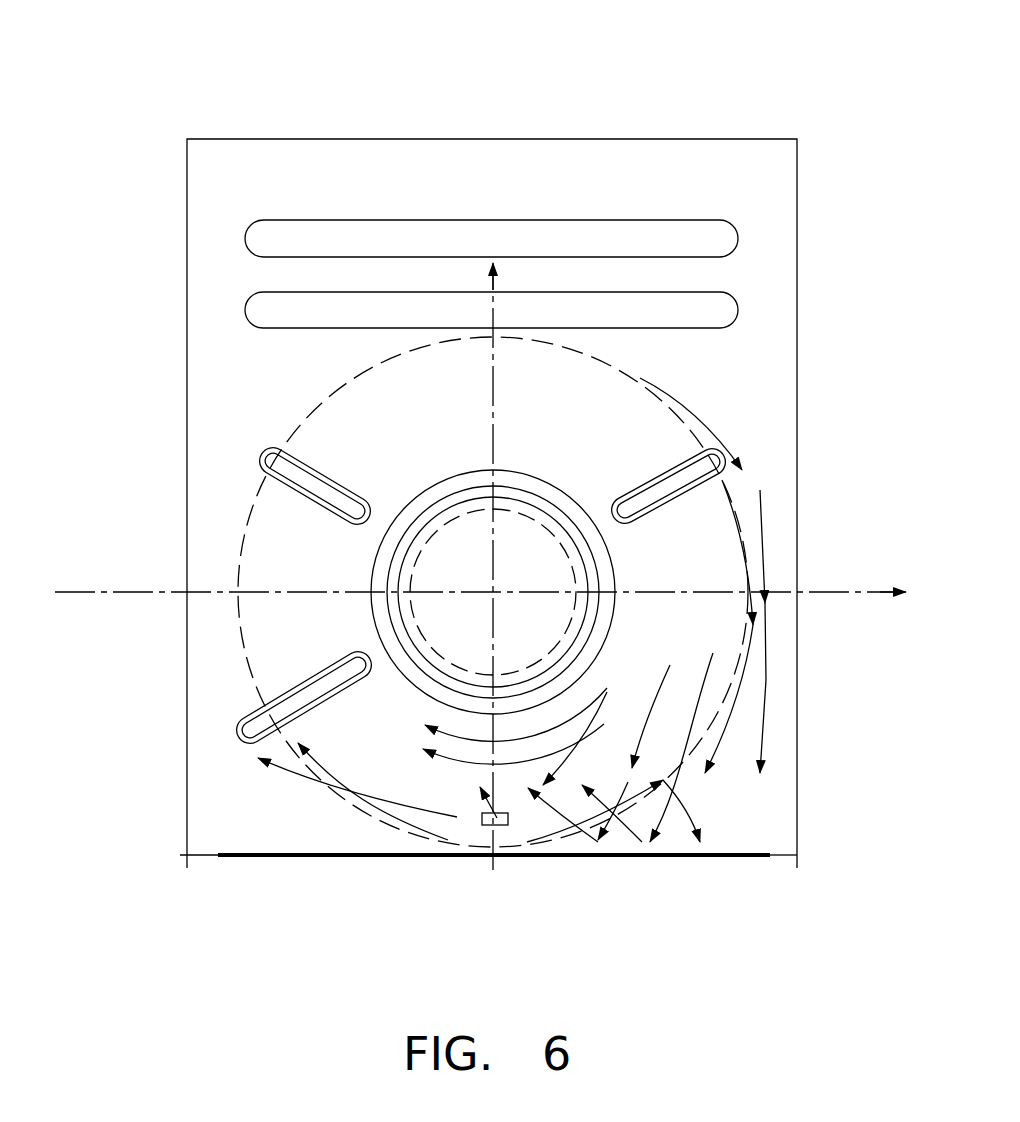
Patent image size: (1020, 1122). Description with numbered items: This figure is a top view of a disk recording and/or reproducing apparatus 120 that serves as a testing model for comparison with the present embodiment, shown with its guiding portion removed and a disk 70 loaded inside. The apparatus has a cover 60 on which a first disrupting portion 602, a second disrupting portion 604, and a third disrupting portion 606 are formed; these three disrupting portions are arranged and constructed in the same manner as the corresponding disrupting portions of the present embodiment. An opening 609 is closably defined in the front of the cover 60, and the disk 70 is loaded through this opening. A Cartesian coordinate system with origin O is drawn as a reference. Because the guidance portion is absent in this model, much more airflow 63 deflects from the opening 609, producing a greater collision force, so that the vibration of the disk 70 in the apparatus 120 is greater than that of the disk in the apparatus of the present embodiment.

The disk recording and/or reproducing apparatus 120 is at (502, 63).
The cover 60 is at (755, 358).
The airflow 63 is at (770, 708).
The disk 70 is at (240, 637).
The first disrupting portion 602 is at (258, 732).
The second disrupting portion 604 is at (275, 466).
The third disrupting portion 606 is at (692, 472).
The opening 609 is at (257, 856).